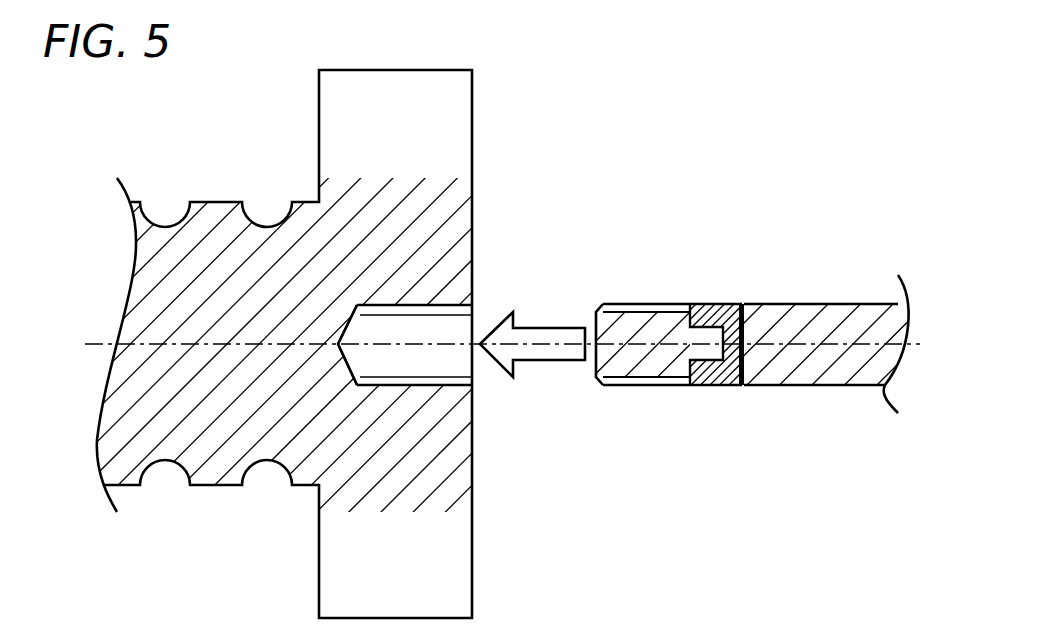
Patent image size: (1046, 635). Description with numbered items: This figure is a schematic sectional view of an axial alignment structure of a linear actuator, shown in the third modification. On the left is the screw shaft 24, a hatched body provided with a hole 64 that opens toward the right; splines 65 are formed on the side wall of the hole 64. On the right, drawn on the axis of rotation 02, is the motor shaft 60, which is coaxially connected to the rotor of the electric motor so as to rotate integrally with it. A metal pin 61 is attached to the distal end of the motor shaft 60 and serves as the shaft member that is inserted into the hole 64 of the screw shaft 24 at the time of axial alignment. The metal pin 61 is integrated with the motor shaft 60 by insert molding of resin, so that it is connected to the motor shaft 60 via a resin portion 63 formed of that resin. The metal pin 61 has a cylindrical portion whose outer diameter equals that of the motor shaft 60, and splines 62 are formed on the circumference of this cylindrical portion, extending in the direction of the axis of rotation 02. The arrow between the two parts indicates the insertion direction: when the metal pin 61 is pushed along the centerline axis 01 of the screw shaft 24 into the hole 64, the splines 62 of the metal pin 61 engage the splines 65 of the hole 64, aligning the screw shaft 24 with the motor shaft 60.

The screw shaft 24 is at (218, 467).
The motor shaft 60 is at (825, 363).
The metal pin 61 is at (650, 368).
The splines 62 is at (648, 304).
The resin portion 63 is at (714, 383).
The hole 64 is at (410, 358).
The splines 65 is at (372, 318).
The first axis 01 is at (271, 345).
The axis of rotation 02 is at (730, 345).